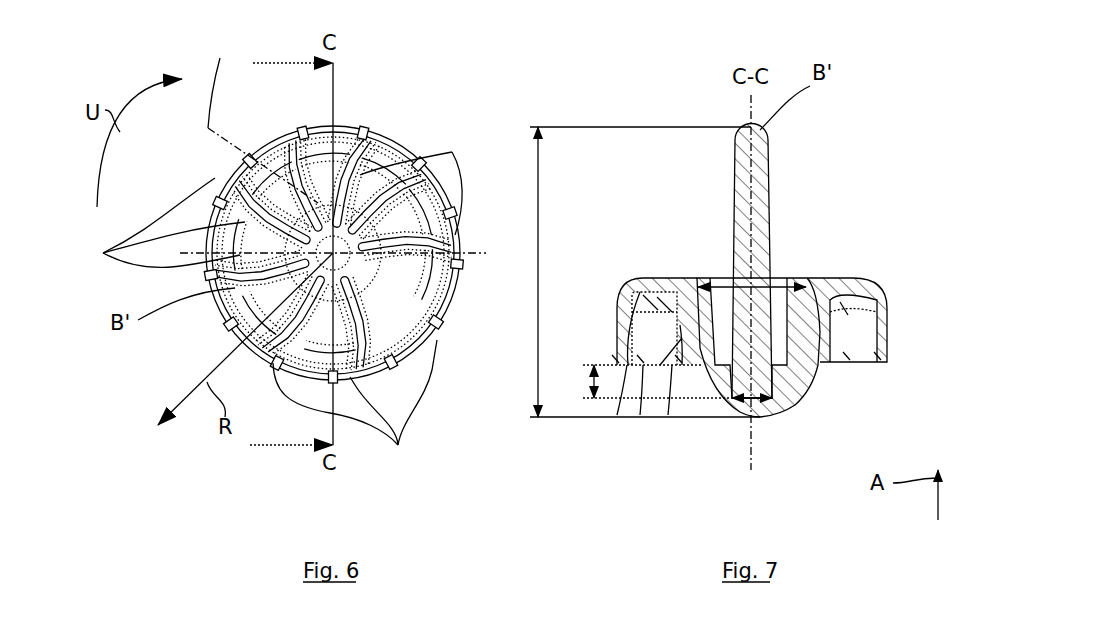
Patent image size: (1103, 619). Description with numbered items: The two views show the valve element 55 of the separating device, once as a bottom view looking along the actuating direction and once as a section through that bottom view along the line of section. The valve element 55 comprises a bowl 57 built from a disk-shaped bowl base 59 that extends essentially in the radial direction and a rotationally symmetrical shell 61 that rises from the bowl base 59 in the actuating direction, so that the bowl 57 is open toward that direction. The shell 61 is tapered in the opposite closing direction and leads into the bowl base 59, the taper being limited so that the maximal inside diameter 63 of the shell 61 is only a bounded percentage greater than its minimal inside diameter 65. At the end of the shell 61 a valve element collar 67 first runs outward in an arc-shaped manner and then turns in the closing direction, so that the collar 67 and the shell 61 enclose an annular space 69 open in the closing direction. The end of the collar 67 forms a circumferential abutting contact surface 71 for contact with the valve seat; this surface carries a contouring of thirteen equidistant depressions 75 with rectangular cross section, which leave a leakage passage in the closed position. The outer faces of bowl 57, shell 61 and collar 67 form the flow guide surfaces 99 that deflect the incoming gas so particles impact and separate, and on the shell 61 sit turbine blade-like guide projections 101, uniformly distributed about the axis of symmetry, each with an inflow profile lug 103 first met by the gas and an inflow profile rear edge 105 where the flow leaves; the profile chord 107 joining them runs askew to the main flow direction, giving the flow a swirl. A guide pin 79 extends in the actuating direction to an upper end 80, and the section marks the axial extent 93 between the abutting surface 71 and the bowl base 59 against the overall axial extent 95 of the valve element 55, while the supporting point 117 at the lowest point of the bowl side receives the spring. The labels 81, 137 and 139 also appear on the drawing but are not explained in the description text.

In FIG. 6, the valve element 55 is at (450, 117).
In FIG. 7, the valve element 55 is at (878, 178).
In FIG. 7, the bowl 57 is at (817, 399).
In FIG. 7, the bowl base 59 is at (730, 418).
In FIG. 7, the shell 61 is at (780, 278).
In FIG. 7, the maximal inside diameter 63 is at (700, 280).
In FIG. 7, the minimal inside diameter 65 is at (758, 418).
In FIG. 7, the valve element collar 67 is at (893, 300).
In FIG. 7, the annular space 69 is at (858, 341).
In FIG. 6, the abutting contact surface 71 is at (392, 137).
In FIG. 7, the abutting contact surface 71 is at (853, 368).
In FIG. 6, the depressions 75 is at (365, 132).
In FIG. 7, the depressions 75 is at (630, 370).
In FIG. 7, the guide pin 79 is at (757, 127).
In FIG. 7, the upper end 80 is at (748, 127).
In FIG. 7, the bore wall 81 is at (722, 283).
In FIG. 7, the axial extent 93 is at (571, 385).
In FIG. 7, the overall axial extent 95 is at (532, 351).
In FIG. 7, the flow guide surfaces 99 is at (683, 333).
In FIG. 6, the guide projections 101 is at (278, 198).
In FIG. 7, the guide projections 101 is at (665, 300).
In FIG. 6, the inflow profile lug 103 is at (333, 172).
In FIG. 6, the inflow profile rear edge 105 is at (264, 152).
In FIG. 6, the profile chord 107 is at (260, 118).
In FIG. 7, the supporting point 117 is at (690, 290).
In FIG. 6, the blade outlet 137 is at (355, 407).
In FIG. 6, the rim 139 is at (453, 305).